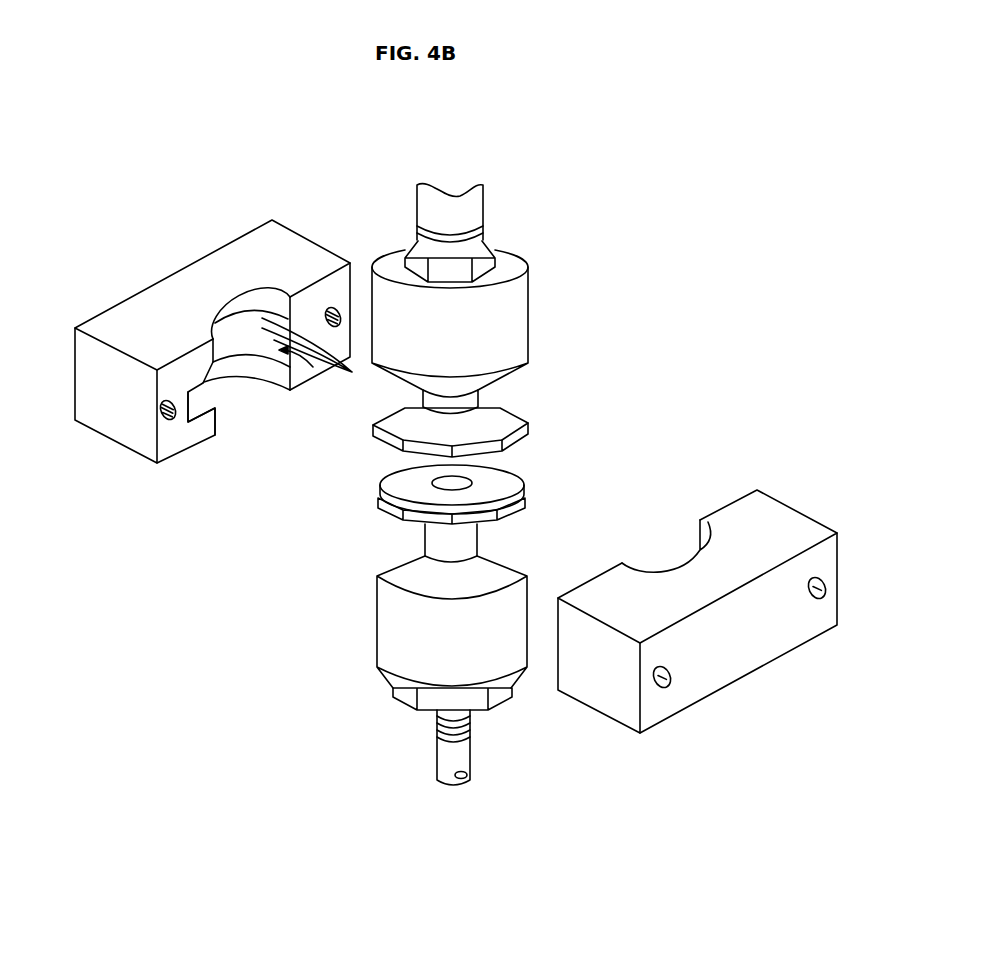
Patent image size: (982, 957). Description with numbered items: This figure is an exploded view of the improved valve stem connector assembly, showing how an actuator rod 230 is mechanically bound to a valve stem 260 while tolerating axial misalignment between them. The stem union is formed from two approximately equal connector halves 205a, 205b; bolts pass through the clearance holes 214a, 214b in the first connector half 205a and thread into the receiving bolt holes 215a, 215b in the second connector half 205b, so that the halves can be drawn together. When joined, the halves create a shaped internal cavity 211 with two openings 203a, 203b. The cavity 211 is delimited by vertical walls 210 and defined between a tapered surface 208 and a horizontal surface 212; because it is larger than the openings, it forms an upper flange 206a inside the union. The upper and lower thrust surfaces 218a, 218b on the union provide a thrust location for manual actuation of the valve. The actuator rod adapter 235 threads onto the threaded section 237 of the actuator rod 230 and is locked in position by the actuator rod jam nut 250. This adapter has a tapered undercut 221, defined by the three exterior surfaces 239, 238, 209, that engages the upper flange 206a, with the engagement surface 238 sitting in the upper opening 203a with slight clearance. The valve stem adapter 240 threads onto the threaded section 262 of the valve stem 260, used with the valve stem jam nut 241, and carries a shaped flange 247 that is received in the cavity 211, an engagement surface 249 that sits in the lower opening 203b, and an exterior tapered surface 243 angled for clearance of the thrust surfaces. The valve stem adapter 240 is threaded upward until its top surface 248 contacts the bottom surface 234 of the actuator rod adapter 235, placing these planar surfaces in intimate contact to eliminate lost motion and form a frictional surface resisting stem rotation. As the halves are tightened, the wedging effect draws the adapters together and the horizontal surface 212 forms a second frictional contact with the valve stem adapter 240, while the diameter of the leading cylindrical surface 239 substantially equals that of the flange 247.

The opening 203a is at (221, 296).
The opening 203b is at (232, 412).
The first connector half 205a is at (613, 678).
The second connector half 205b is at (97, 408).
The upper flange 206a is at (254, 298).
The tapered surface 208 is at (300, 305).
The exterior surface 209 is at (502, 413).
The vertical walls 210 is at (321, 361).
The shaped internal cavity 211 is at (300, 340).
The horizontal surface 212 is at (245, 349).
The clearance hole 214a is at (820, 599).
The clearance hole 214b is at (668, 688).
The receiving bolt hole 215a is at (341, 312).
The receiving bolt hole 215b is at (178, 418).
The upper thrust surface 218a is at (132, 320).
The lower thrust surface 218b is at (138, 460).
The tapered undercut 221 is at (398, 396).
The actuator rod 230 is at (485, 203).
The bottom surface 234 is at (382, 447).
The actuator rod adapter 235 is at (545, 310).
The threaded section 237 is at (483, 230).
The engagement surface 238 is at (480, 388).
The leading cylindrical surface 239 is at (514, 486).
The valve stem adapter 240 is at (534, 650).
The valve stem jam nut 241 is at (398, 693).
The exterior tapered surface 243 is at (492, 566).
The shaped flange 247 is at (396, 512).
The top surface 248 is at (382, 495).
The engagement surface 249 is at (423, 537).
The actuator rod jam nut 250 is at (497, 257).
The valve stem 260 is at (437, 769).
The threaded section 262 is at (437, 730).